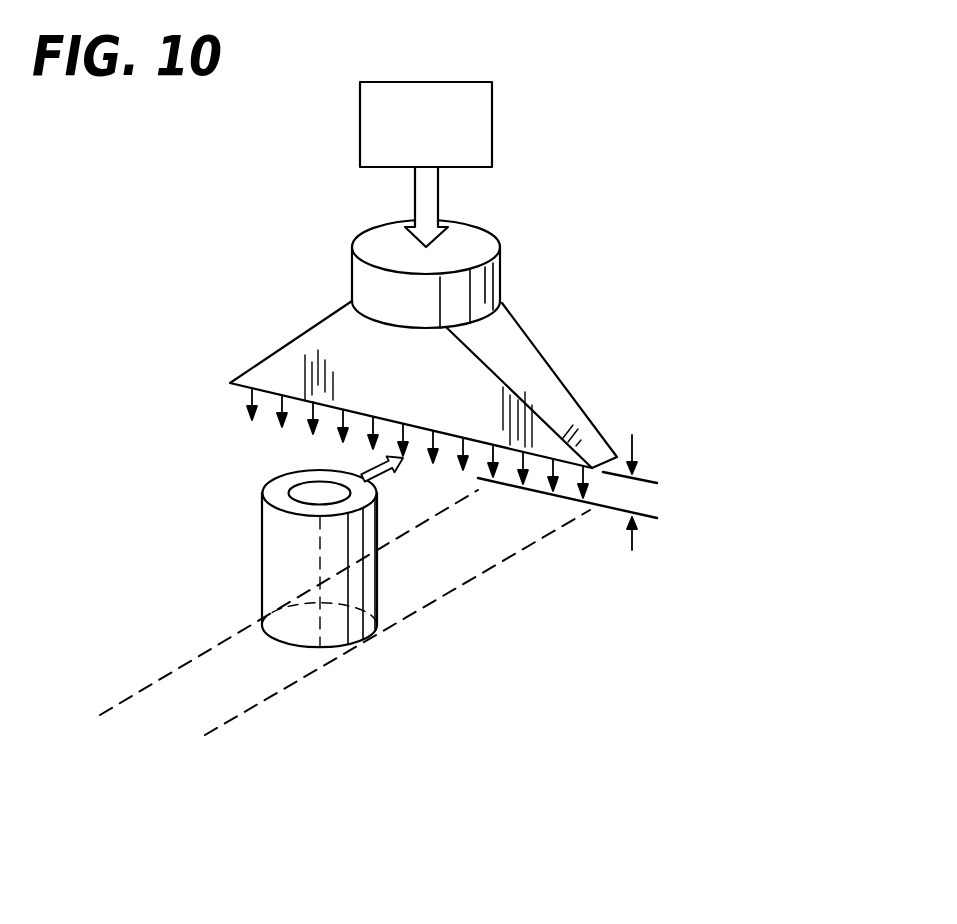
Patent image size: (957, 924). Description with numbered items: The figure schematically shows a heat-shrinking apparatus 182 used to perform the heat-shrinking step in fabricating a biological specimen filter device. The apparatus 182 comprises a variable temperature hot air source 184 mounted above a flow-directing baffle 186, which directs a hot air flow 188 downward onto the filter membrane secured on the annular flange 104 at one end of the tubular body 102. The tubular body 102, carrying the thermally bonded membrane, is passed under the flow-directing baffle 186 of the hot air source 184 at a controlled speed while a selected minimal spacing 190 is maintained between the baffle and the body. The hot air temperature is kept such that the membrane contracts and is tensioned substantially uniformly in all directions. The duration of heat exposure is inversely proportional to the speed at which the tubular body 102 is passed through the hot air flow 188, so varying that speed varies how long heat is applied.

The heat-shrinking apparatus 182 is at (752, 161).
The variable temperature hot air source 184 is at (492, 115).
The flow-directing baffle 186 is at (535, 380).
The hot air flow 188 is at (243, 392).
The minimal spacing 190 is at (634, 499).
The tubular body 102 is at (280, 579).
The annular flange 104 is at (278, 495).